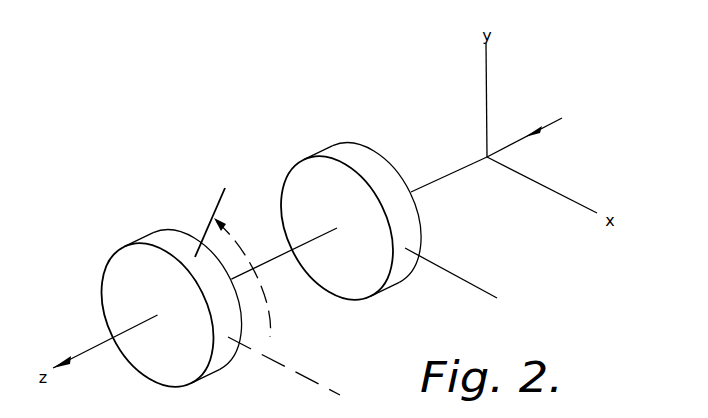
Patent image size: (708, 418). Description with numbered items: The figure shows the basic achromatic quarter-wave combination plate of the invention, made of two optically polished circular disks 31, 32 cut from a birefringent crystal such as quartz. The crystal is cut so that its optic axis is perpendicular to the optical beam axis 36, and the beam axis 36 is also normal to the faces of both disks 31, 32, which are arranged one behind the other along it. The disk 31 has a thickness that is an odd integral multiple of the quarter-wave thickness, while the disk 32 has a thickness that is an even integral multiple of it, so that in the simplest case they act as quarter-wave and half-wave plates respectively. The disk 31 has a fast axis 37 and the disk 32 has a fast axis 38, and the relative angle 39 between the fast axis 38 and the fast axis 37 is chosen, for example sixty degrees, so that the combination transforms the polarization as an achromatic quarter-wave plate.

The disk 31 is at (340, 153).
The disk 32 is at (160, 240).
The optical beam axis 36 is at (550, 126).
The fast axis 37 is at (487, 290).
The fast axis 38 is at (222, 192).
The relative angle 39 is at (272, 337).